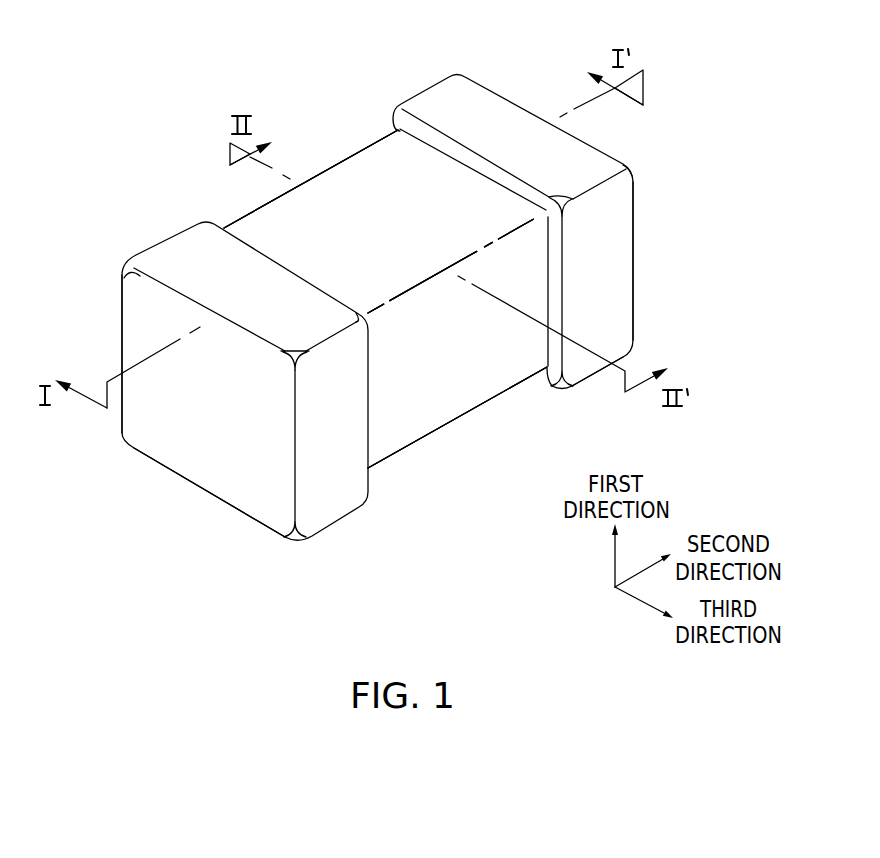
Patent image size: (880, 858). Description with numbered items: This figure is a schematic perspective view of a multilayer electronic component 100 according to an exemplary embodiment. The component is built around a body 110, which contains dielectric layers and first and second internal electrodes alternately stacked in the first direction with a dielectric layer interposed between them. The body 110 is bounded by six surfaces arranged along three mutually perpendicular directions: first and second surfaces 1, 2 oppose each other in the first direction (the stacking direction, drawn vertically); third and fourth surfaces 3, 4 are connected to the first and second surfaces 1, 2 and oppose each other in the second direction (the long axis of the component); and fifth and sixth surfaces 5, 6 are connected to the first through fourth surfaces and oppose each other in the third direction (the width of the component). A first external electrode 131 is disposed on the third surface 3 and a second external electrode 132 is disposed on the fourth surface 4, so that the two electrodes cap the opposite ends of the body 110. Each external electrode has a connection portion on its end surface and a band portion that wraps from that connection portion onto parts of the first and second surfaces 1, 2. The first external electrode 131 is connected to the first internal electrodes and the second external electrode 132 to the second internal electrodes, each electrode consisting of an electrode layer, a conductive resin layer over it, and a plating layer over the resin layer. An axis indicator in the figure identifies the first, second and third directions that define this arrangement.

The multilayer electronic component 100 is at (163, 38).
The body 110 is at (258, 238).
The first external electrode 131 is at (178, 252).
The second external electrode 132 is at (435, 107).
The first surface 1 is at (418, 400).
The second surface 2 is at (393, 185).
The third surface 3 is at (216, 438).
The fourth surface 4 is at (590, 243).
The fifth surface 5 is at (335, 202).
The sixth surface 6 is at (479, 368).